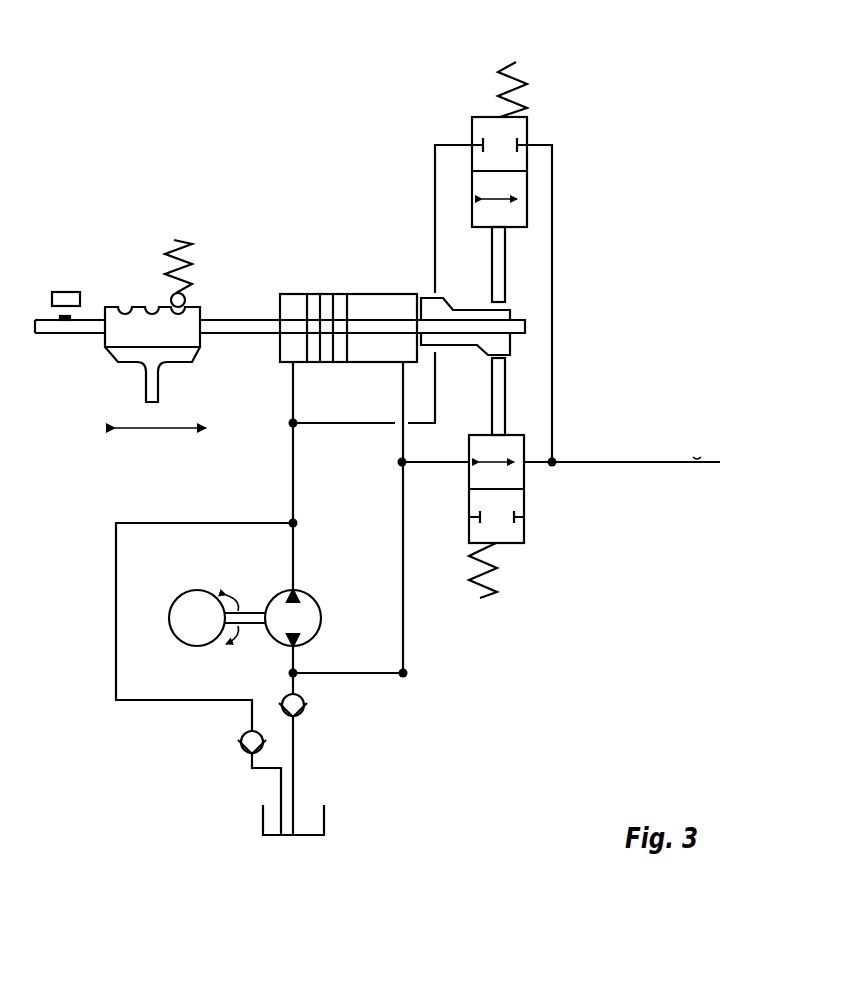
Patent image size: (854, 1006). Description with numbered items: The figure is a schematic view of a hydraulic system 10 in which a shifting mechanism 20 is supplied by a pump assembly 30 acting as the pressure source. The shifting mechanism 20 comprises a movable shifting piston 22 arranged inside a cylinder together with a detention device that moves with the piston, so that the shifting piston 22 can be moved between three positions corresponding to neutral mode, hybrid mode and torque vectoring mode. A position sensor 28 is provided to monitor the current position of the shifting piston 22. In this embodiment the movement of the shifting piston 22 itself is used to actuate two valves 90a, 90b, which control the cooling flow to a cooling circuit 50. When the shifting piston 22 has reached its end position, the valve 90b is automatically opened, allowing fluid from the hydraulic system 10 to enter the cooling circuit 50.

The hydraulic system 10 is at (325, 91).
The shifting mechanism 20 is at (262, 266).
The shifting piston 22 is at (357, 318).
The position sensor 28 is at (66, 292).
The pump assembly 30 is at (253, 596).
The cooling circuit 50 is at (652, 460).
The valve 90a is at (530, 132).
The valve 90b is at (523, 493).